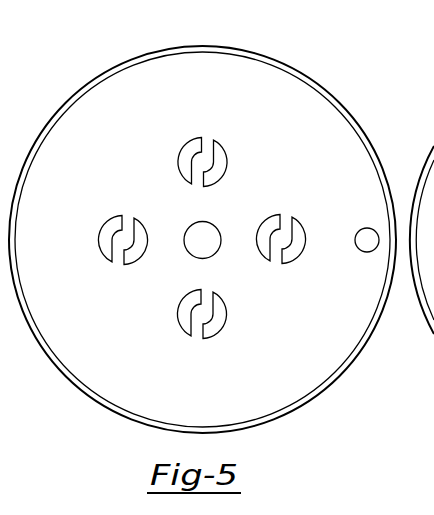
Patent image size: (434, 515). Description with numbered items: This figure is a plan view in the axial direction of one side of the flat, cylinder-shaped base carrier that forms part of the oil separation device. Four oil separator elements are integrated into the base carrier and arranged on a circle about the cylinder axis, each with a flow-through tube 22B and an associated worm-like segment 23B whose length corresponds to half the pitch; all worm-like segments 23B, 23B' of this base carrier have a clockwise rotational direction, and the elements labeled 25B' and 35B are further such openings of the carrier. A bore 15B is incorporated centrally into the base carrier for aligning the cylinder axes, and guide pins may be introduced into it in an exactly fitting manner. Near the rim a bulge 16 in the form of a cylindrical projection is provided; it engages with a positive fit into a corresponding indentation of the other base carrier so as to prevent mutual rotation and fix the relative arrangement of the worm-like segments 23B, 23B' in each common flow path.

The bore 15B is at (211, 247).
The bulge 16 is at (356, 245).
The flow-through tube 22B is at (303, 230).
The worm-like segment 23B is at (248, 229).
The worm-like segment 23B' is at (128, 231).
The slot pair 25B' is at (128, 251).
The slot pair 35B is at (284, 251).